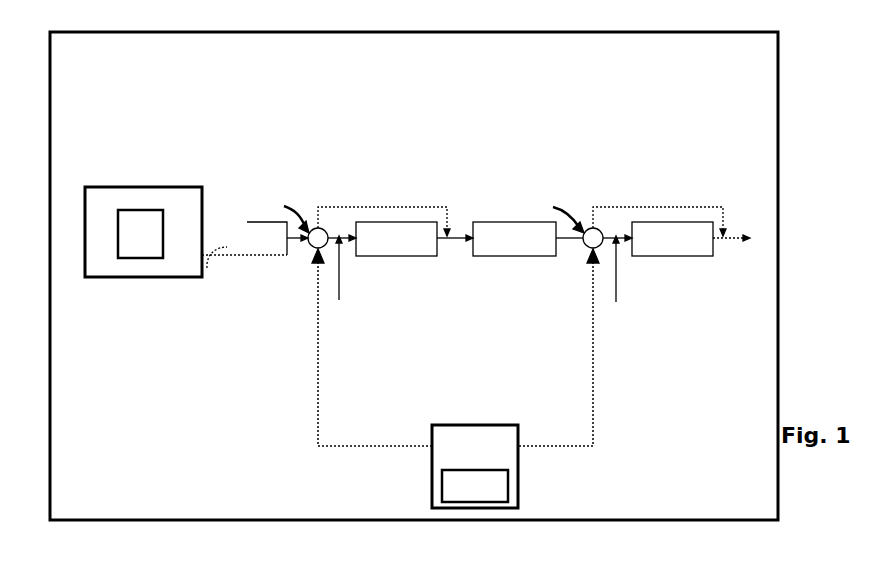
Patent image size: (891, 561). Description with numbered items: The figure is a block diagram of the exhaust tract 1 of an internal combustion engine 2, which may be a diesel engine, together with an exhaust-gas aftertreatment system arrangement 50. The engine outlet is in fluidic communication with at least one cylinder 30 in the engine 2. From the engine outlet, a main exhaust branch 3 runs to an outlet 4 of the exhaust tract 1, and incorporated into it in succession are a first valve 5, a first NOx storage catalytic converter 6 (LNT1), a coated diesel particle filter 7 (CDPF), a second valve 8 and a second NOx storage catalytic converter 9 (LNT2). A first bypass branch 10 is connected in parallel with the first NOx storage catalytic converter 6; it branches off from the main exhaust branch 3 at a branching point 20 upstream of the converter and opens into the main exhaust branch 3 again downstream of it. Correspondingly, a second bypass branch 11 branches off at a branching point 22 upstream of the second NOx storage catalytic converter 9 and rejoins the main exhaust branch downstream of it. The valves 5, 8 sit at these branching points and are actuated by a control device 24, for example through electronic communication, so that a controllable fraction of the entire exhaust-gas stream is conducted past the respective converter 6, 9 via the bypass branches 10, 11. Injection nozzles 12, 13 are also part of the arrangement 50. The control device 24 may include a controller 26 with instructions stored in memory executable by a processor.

The exhaust tract 1 is at (57, 32).
The internal combustion engine 2 is at (92, 185).
The cylinder 30 is at (130, 244).
The exhaust-gas aftertreatment system arrangement 50 is at (480, 108).
The main exhaust branch 3 is at (300, 257).
The outlet 4 is at (750, 208).
The first valve 5 is at (311, 228).
The first NOx storage catalytic converter 6 is at (422, 258).
The coated diesel particle filter 7 is at (503, 222).
The second valve 8 is at (583, 228).
The second NOx storage catalytic converter 9 is at (692, 258).
The first bypass branch 10 is at (375, 207).
The second bypass branch 11 is at (641, 207).
The injection nozzle 12 is at (342, 272).
The injection nozzle 13 is at (620, 280).
The branching point 20 is at (283, 211).
The branching point 22 is at (555, 211).
The control device 24 is at (464, 462).
The controller 26 is at (464, 499).